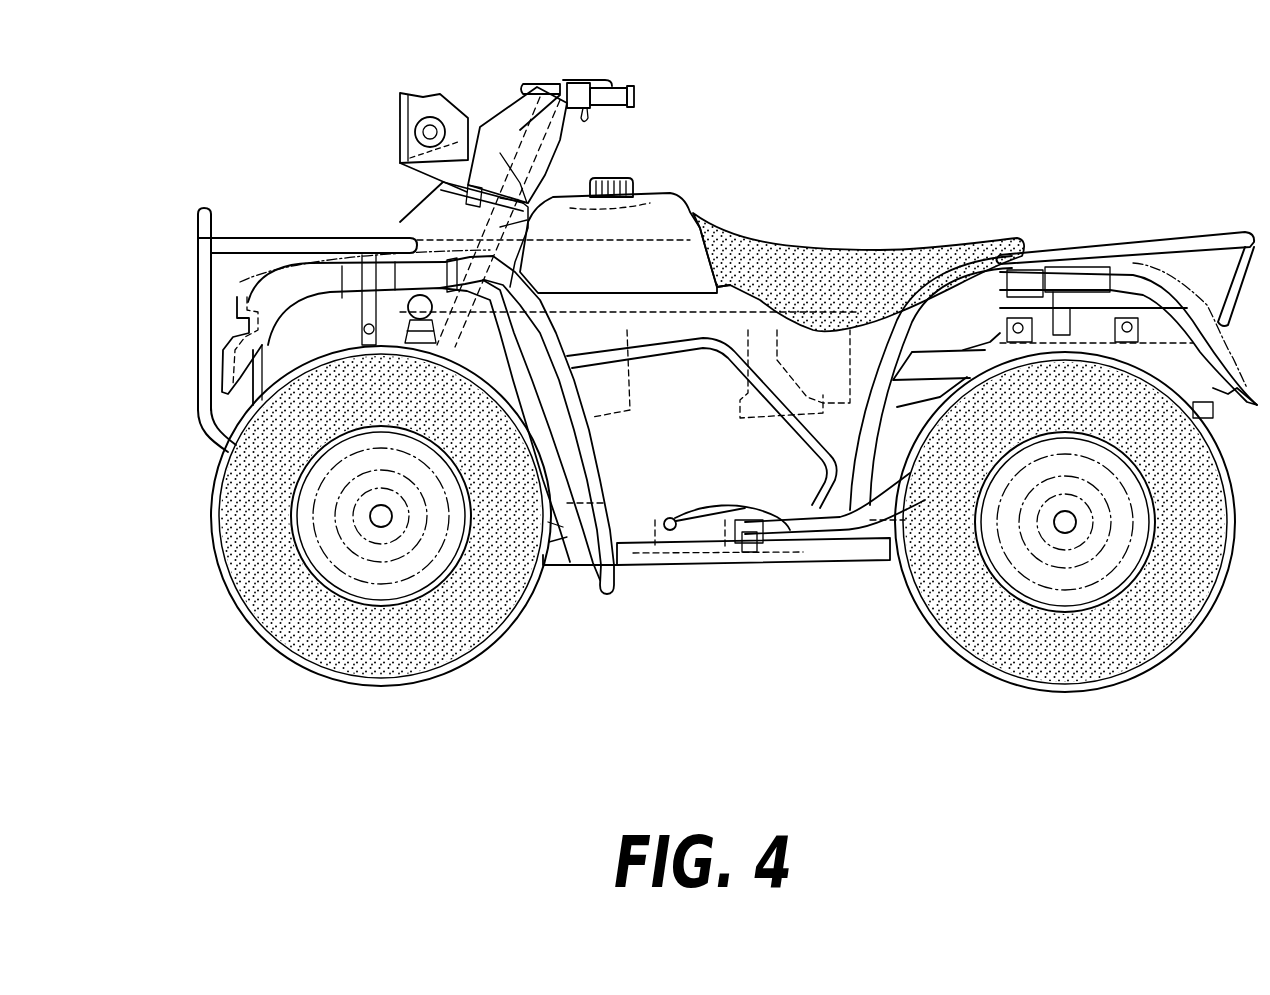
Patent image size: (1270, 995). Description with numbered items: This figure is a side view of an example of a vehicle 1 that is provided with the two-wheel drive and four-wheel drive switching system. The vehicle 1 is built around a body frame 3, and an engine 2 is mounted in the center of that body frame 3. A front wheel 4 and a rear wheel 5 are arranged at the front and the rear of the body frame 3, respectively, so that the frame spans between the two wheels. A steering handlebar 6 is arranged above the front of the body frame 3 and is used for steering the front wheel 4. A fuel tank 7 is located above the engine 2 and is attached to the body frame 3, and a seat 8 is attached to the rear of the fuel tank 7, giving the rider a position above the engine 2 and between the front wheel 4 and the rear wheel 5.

The vehicle 1 is at (672, 195).
The engine 2 is at (790, 507).
The body frame 3 is at (682, 565).
The front wheel 4 is at (223, 583).
The rear wheel 5 is at (930, 633).
The steering handlebar 6 is at (582, 86).
The fuel tank 7 is at (650, 196).
The seat 8 is at (855, 253).